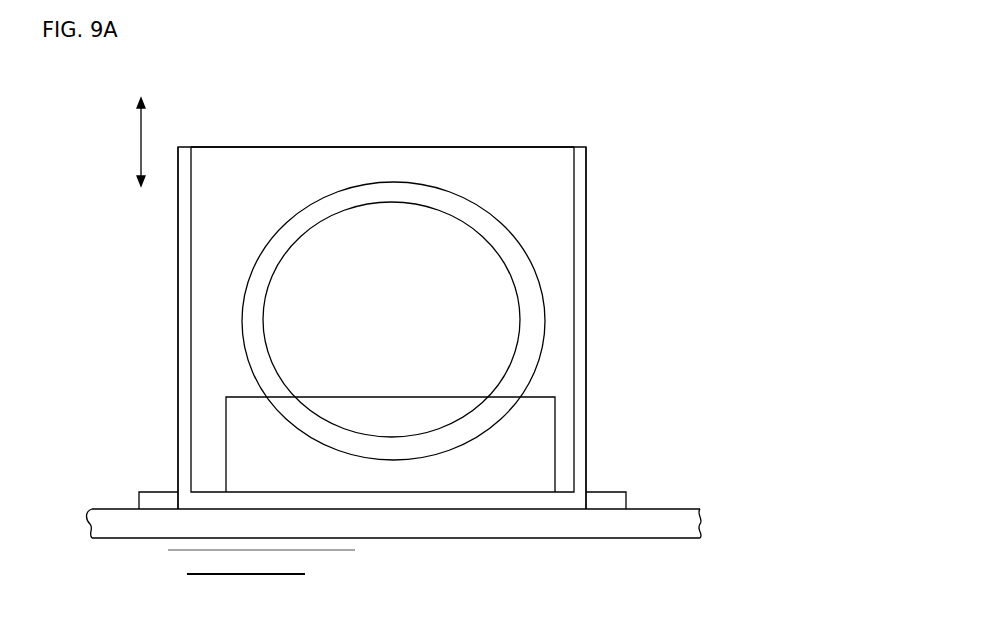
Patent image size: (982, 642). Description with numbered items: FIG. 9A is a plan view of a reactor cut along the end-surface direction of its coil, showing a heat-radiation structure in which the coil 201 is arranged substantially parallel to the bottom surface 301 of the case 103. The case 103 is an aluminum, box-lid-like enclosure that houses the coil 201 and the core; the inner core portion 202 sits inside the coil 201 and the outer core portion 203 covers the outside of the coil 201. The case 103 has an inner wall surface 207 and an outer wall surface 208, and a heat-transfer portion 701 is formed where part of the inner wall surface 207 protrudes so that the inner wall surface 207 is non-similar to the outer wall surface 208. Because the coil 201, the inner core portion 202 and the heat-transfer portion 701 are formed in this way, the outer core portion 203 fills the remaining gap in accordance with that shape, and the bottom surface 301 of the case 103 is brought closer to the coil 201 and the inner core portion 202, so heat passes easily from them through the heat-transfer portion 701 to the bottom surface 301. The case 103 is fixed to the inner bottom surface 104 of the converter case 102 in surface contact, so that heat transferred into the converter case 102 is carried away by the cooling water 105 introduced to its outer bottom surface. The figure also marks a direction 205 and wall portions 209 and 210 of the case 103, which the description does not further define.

The converter case 102 is at (106, 512).
The case 103 is at (586, 305).
The inner bottom surface 104 is at (652, 523).
The cooling water 105 is at (488, 591).
The coil 201 is at (479, 221).
The inner core portion 202 is at (382, 252).
The outer core portion 203 is at (467, 173).
The movement direction 205 is at (139, 138).
The inner wall surface 207 is at (190, 162).
The outer wall surface 208 is at (178, 222).
The inner side wall 209 is at (184, 271).
The right side wall 210 is at (580, 365).
The bottom surface 301 is at (547, 502).
The heat-transfer portion 701 is at (255, 428).